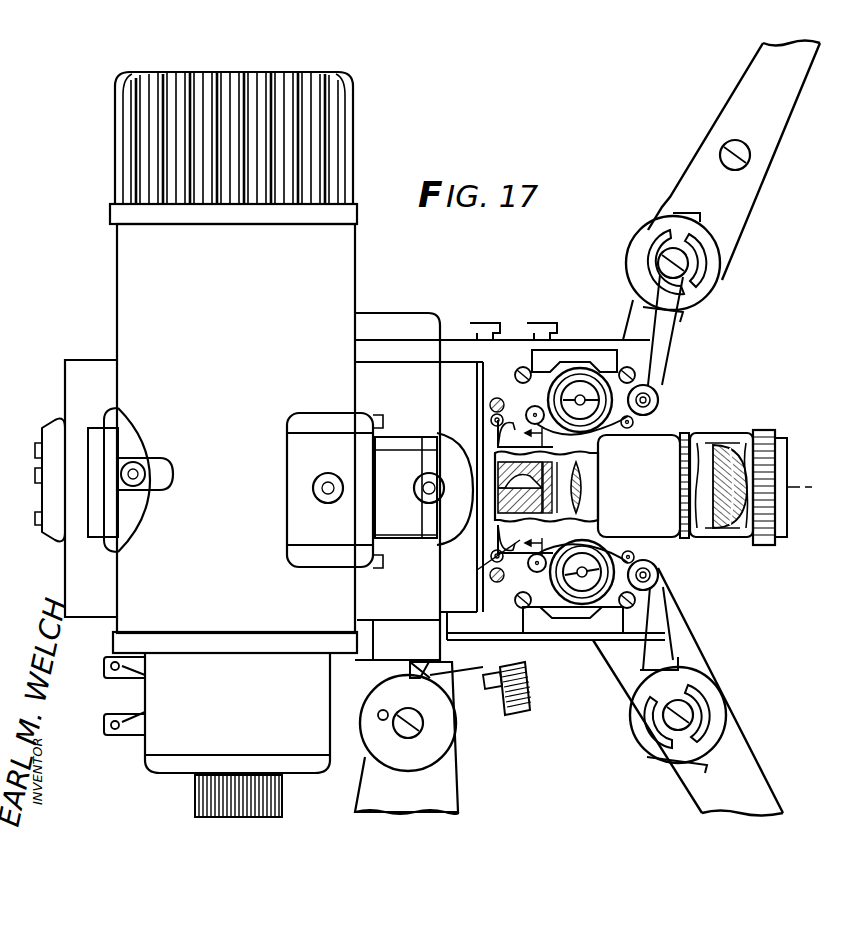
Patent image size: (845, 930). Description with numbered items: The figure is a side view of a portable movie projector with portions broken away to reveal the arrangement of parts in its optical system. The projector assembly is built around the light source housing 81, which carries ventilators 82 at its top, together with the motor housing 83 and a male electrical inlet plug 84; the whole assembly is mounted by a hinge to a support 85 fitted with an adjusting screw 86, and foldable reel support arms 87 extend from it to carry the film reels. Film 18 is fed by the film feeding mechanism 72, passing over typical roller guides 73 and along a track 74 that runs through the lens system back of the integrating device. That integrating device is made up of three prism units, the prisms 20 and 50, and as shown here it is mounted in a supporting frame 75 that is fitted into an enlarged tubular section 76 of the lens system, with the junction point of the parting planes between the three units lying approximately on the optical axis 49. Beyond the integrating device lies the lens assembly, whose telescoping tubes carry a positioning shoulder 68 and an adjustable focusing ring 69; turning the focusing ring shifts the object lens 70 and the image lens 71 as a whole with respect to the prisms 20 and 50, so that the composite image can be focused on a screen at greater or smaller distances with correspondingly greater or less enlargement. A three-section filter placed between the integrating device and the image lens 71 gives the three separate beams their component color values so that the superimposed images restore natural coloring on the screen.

The film 18 is at (546, 489).
The prism 20 is at (496, 503).
The optical axis 49 is at (812, 487).
The prism 50 is at (500, 470).
The positioning shoulder 68 is at (684, 433).
The adjustable focusing ring 69 is at (764, 432).
The object lens 70 is at (736, 528).
The image lens 71 is at (600, 490).
The film feeding mechanism 72 is at (583, 398).
The roller guides 73 is at (498, 560).
The track 74 is at (476, 495).
The supporting frame 75 is at (497, 456).
The enlarged tubular section 76 is at (507, 536).
The light source housing 81 is at (136, 265).
The ventilators 82 is at (140, 142).
The motor housing 83 is at (75, 375).
The male electrical inlet plug 84 is at (110, 728).
The support 85 is at (445, 770).
The adjusting screw 86 is at (528, 706).
The foldable reel support arms 87 is at (732, 205).